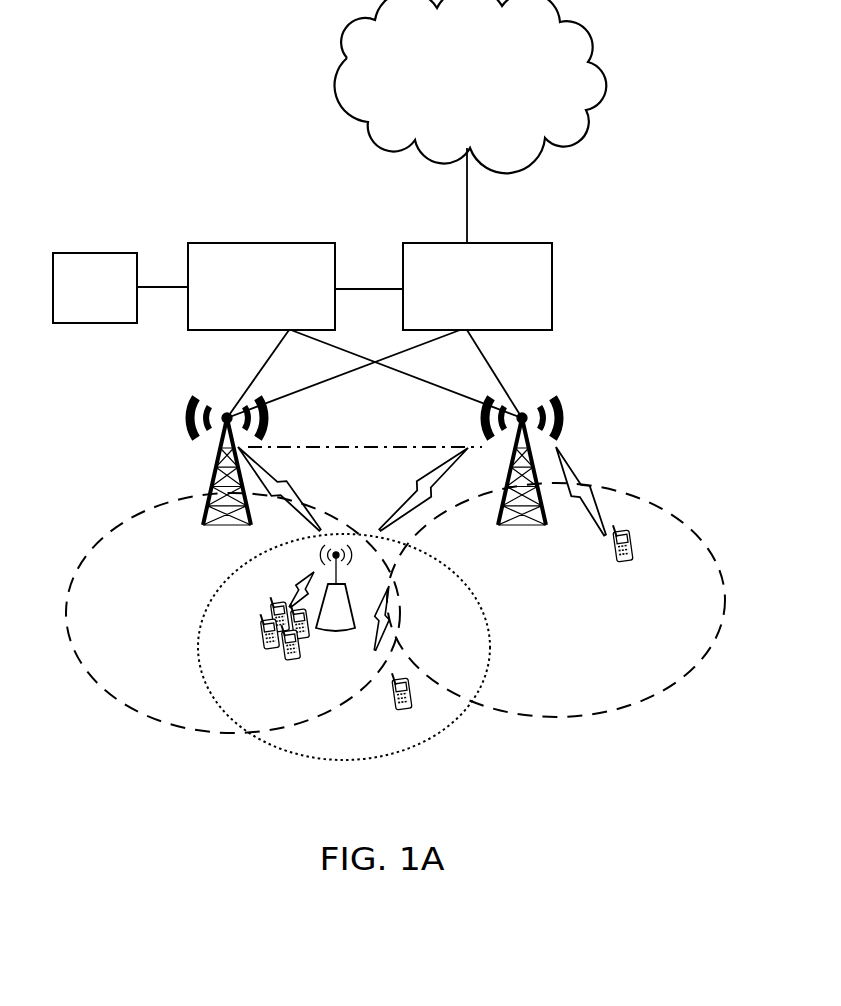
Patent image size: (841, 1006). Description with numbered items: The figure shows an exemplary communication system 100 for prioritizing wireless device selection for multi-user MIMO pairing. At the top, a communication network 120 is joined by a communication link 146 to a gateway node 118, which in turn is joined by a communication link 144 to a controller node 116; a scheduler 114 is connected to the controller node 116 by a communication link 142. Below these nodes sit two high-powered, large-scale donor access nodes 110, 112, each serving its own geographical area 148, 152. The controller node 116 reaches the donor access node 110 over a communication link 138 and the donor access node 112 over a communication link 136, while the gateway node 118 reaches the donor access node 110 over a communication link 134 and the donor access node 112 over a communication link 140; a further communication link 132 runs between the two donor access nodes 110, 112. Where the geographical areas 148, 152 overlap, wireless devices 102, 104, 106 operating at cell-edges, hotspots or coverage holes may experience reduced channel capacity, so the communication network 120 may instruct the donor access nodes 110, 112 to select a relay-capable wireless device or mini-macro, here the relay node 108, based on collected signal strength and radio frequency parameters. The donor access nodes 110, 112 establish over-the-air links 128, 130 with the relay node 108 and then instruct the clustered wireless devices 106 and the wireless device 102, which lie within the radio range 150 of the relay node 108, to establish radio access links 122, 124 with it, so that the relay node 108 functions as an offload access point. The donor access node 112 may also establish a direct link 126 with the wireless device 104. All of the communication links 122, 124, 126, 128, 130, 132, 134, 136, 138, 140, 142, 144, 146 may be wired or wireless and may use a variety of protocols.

The communication system 100 is at (73, 751).
The wireless device 102 is at (396, 712).
The wireless device 104 is at (616, 562).
The clustered wireless devices 106 is at (296, 662).
The relay node 108 is at (327, 636).
The donor access node 110 is at (205, 528).
The donor access node 112 is at (541, 527).
The scheduler 114 is at (95, 288).
The controller node 116 is at (261, 286).
The gateway node 118 is at (477, 286).
The communication network 120 is at (471, 86).
The radio access link 122 is at (297, 586).
The radio access link 124 is at (384, 586).
The direct link 126 is at (573, 467).
The over-the-air link 128 is at (300, 478).
The over-the-air link 130 is at (406, 488).
The communication link 132 is at (334, 447).
The communication link 134 is at (312, 389).
The communication link 136 is at (437, 389).
The communication link 138 is at (253, 370).
The communication link 140 is at (506, 370).
The communication link 142 is at (146, 283).
The communication link 144 is at (346, 283).
The communication link 146 is at (471, 203).
The geographical area 148 is at (172, 732).
The radio range 150 is at (342, 763).
The geographical area 152 is at (645, 702).